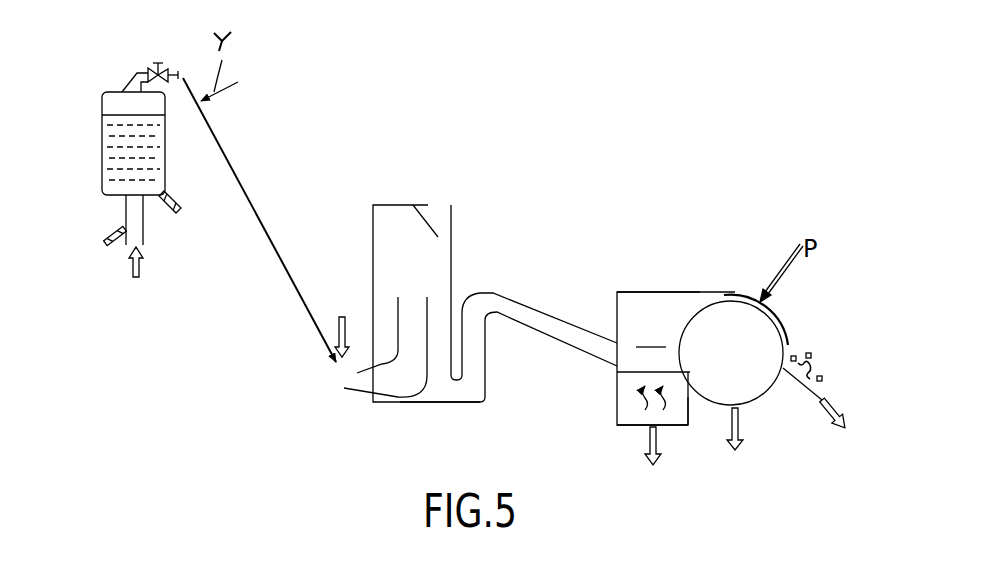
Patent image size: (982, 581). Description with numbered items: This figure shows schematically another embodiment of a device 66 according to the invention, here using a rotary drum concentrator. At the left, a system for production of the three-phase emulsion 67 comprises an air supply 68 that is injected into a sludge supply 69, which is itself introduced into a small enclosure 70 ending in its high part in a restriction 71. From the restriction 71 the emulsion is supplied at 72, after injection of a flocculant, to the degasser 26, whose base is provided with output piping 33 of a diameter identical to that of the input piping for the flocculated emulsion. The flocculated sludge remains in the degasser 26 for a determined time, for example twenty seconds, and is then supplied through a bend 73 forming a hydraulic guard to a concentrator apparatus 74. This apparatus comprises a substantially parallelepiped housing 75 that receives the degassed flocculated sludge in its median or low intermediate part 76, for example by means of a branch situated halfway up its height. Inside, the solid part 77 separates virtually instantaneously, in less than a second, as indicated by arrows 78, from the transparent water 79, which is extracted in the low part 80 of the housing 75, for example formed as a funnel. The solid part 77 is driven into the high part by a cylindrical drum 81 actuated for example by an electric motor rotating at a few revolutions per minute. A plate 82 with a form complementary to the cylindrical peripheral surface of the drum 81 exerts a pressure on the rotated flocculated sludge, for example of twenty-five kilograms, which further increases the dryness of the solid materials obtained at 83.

The degasser 26 is at (466, 248).
The output piping 33 is at (485, 400).
The device 66 is at (323, 148).
The system for production of the three-phase emulsion 67 is at (110, 133).
The air supply 68 is at (105, 244).
The sludge supply 69 is at (142, 265).
The small enclosure 70 is at (165, 133).
The restriction 71 is at (146, 66).
The supply 72 is at (321, 370).
The bend 73 is at (490, 293).
The concentrator apparatus 74 is at (662, 284).
The housing 75 is at (616, 312).
The median or low intermediate part 76 is at (612, 374).
The solid part 77 is at (651, 333).
The arrows 78 is at (640, 402).
The transparent water 79 is at (680, 412).
The low part 80 is at (639, 431).
The cylindrical drum 81 is at (760, 332).
The plate 82 is at (732, 292).
The solid materials 83 is at (814, 372).